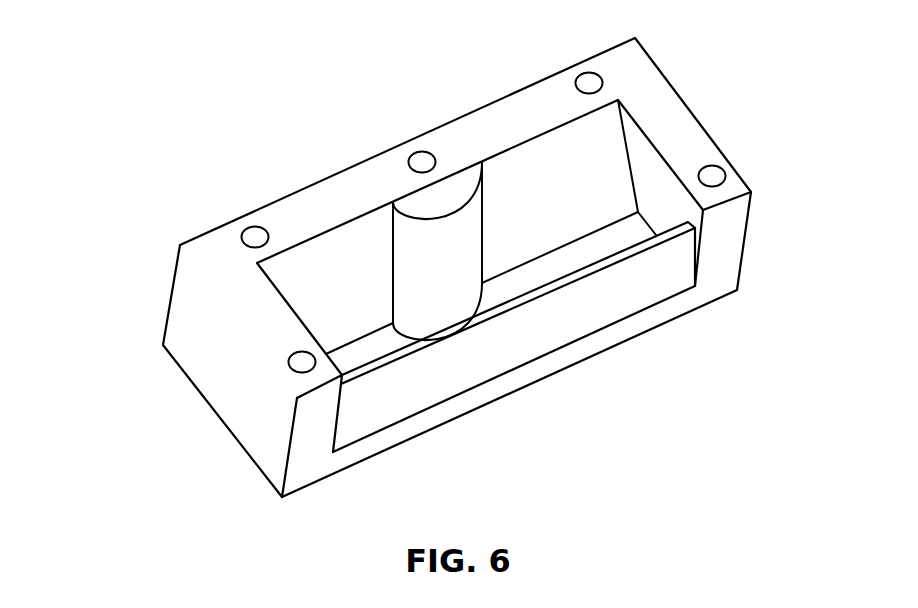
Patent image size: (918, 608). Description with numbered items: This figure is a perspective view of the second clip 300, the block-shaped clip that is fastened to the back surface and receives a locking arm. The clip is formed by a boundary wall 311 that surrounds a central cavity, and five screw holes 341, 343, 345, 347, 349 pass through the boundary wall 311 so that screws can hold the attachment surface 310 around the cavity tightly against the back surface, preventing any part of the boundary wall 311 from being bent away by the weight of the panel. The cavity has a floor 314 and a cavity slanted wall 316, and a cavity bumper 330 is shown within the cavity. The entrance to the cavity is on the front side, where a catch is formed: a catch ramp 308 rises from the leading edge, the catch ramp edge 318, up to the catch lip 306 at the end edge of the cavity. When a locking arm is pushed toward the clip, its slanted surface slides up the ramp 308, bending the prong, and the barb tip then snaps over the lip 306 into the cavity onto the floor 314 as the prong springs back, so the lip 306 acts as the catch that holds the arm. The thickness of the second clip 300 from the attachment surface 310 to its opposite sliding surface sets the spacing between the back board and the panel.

The second clip 300 is at (152, 68).
The catch lip 306 is at (565, 285).
The catch ramp 308 is at (480, 360).
The attachment surface 310 is at (313, 202).
The boundary wall 311 is at (195, 327).
The catch cavity floor 314 is at (557, 262).
The cavity slanted wall 316 is at (582, 163).
The catch ramp edge 318 is at (428, 418).
The cavity bumper 330 is at (423, 215).
The screw hole 341 is at (255, 236).
The screw hole 343 is at (422, 160).
The screw hole 345 is at (589, 82).
The screw hole 347 is at (714, 176).
The screw hole 349 is at (305, 360).